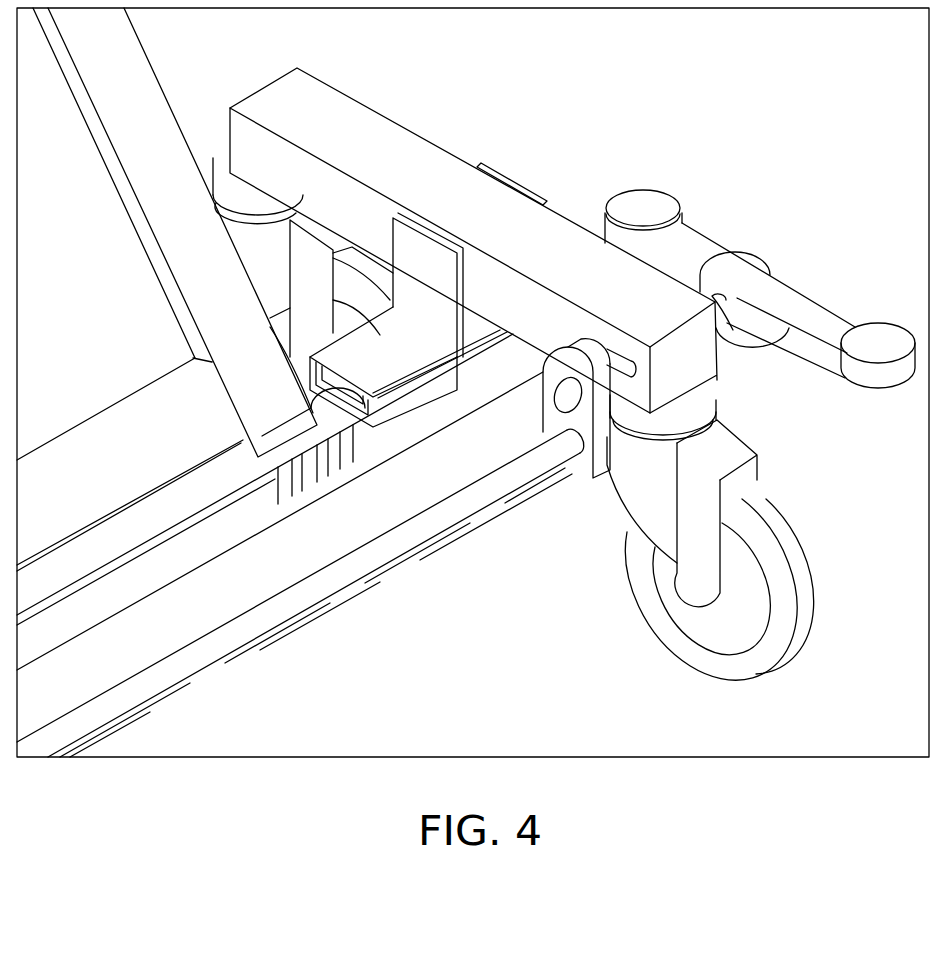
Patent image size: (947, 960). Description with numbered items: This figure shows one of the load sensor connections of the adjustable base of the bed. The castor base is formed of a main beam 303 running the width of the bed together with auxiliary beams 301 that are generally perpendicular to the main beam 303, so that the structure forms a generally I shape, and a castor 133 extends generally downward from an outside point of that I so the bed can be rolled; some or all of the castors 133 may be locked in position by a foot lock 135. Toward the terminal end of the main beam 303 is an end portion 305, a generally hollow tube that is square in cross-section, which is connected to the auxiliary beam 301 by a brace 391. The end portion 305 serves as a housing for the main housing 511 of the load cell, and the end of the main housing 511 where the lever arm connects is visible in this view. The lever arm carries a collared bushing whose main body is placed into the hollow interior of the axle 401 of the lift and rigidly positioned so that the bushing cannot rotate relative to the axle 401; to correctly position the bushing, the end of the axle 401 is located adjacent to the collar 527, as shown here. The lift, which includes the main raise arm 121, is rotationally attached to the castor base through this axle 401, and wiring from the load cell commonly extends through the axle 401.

The main raise arm 121 is at (245, 395).
The castor 133 is at (222, 187).
The foot lock 135 is at (817, 310).
The auxiliary beam 301 is at (357, 123).
The main beam 303 is at (258, 508).
The end portion 305 is at (367, 358).
The brace 391 is at (430, 247).
The axle 401 is at (143, 520).
The main housing 511 is at (357, 410).
The collar 527 is at (367, 417).